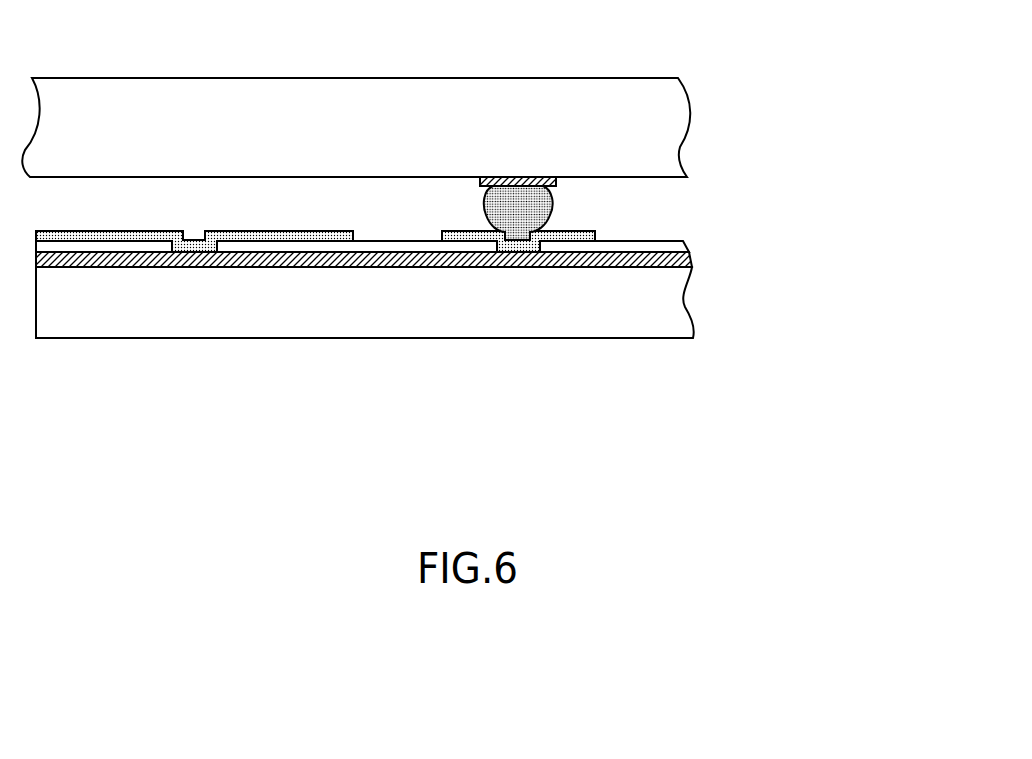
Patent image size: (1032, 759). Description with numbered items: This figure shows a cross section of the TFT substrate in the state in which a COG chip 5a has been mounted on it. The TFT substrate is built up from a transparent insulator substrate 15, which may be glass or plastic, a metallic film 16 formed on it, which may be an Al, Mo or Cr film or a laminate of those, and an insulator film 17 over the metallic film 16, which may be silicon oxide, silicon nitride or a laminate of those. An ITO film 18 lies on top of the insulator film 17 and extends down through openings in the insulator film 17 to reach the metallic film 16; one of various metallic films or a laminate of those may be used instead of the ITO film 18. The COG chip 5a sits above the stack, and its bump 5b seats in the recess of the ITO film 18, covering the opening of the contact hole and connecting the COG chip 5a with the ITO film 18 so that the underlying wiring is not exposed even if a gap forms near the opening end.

The COG chip 5a is at (480, 97).
The bump 5b is at (543, 203).
The transparent insulator substrate 15 is at (387, 322).
The metallic film 16 is at (690, 264).
The insulator film 17 is at (685, 243).
The ITO film 18 is at (597, 233).